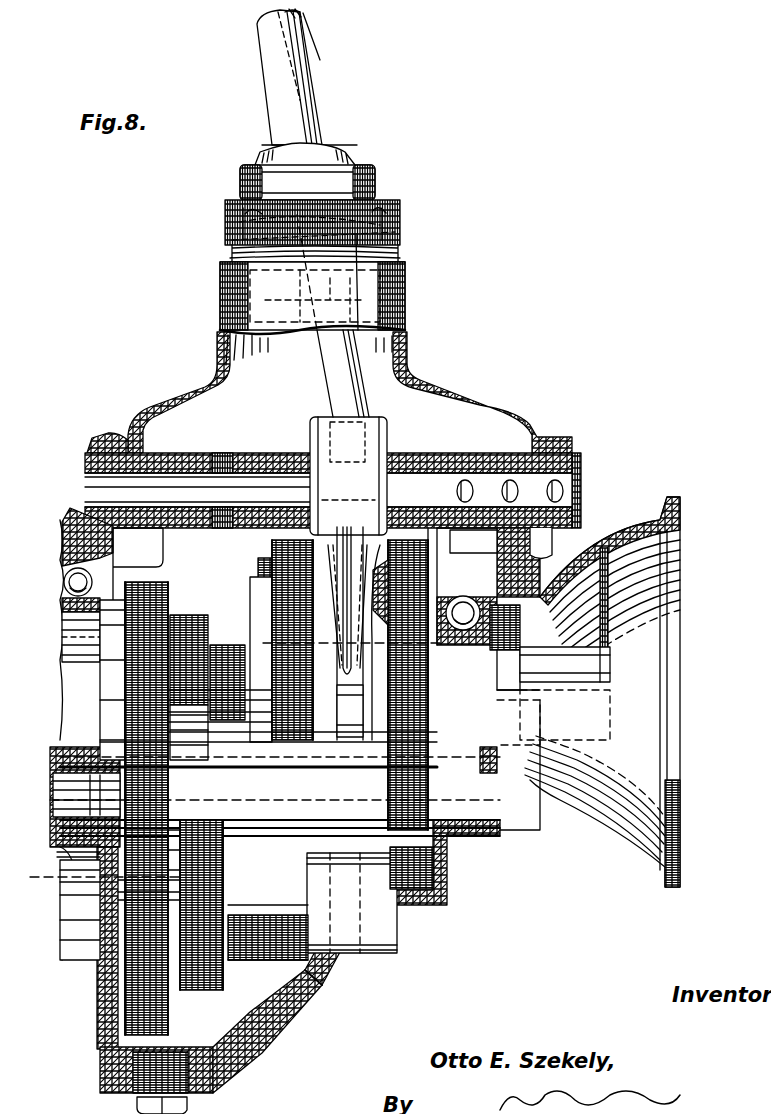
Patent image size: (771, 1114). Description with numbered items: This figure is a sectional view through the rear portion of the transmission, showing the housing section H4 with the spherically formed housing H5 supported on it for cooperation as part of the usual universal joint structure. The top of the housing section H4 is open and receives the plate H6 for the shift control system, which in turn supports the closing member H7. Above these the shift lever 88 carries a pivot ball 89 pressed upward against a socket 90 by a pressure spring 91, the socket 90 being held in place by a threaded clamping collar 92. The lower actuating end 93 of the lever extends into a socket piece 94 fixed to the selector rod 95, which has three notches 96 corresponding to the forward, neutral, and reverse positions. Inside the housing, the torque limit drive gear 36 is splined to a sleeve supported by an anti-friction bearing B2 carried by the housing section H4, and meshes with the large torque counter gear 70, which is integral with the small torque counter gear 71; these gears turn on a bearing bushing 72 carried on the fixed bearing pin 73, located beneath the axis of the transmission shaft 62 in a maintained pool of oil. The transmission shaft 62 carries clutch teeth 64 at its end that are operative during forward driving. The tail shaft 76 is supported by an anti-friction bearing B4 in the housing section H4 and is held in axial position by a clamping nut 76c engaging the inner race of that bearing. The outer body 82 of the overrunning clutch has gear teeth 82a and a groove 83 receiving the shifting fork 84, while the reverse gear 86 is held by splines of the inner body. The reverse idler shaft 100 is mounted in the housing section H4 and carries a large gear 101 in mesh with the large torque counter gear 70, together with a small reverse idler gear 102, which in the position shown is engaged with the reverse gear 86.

The shift lever 88 is at (296, 96).
The pivot ball 89 is at (324, 129).
The socket 90 is at (362, 170).
The pressure spring 91 is at (403, 221).
The threaded clamping collar 92 is at (402, 240).
The lower actuating end 93 is at (330, 373).
The socket piece 94 is at (322, 450).
The selector rod 95 is at (245, 487).
The notches 96 is at (543, 487).
The reverse gear 86 is at (402, 562).
The outer body 82 is at (265, 580).
The gear teeth 82a is at (290, 556).
The groove 83 is at (350, 708).
The shifting fork 84 is at (350, 680).
The torque limit drive gear 36 is at (146, 598).
The clutch teeth 64 is at (186, 624).
The tail shaft 76 is at (588, 668).
The clamping nut 76c is at (505, 640).
The transmission shaft 62 is at (70, 645).
The large torque counter gear 70 is at (130, 985).
The small torque counter gear 71 is at (203, 975).
The bearing bushing 72 is at (249, 950).
The fixed bearing pin 73 is at (345, 960).
The reverse idler shaft 100 is at (475, 855).
The large gear 101 is at (130, 860).
The small reverse idler gear 102 is at (403, 863).
The housing section H4 is at (70, 522).
The housing H5 is at (630, 527).
The plate H6 is at (575, 462).
The closing member H7 is at (483, 400).
The anti-friction bearing B2 is at (66, 583).
The anti-friction bearing B4 is at (463, 596).